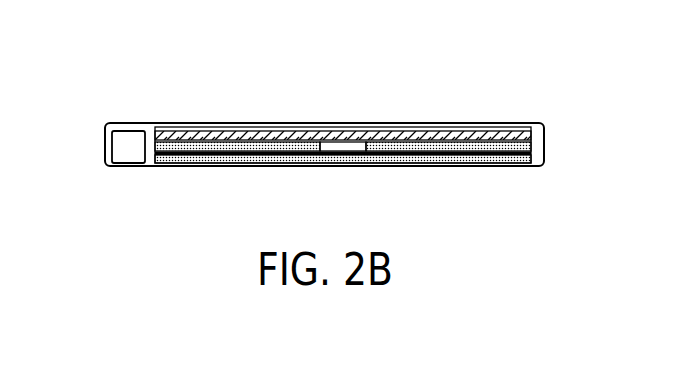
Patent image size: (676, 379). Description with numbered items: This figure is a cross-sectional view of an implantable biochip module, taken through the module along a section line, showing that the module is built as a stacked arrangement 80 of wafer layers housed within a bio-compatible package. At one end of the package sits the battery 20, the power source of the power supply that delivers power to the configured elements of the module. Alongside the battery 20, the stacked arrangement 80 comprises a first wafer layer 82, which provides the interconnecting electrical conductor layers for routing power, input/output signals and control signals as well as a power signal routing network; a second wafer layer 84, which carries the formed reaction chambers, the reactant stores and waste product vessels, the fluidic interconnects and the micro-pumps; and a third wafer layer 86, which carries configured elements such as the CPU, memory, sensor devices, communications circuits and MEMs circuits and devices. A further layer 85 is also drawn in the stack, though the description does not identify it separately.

The battery 20 is at (104, 165).
The stacked arrangement 80 is at (324, 78).
The third wafer layer 86 is at (285, 137).
The second wafer layer 84 is at (257, 152).
The first wafer layer 82 is at (312, 160).
The second layer 85 is at (412, 153).